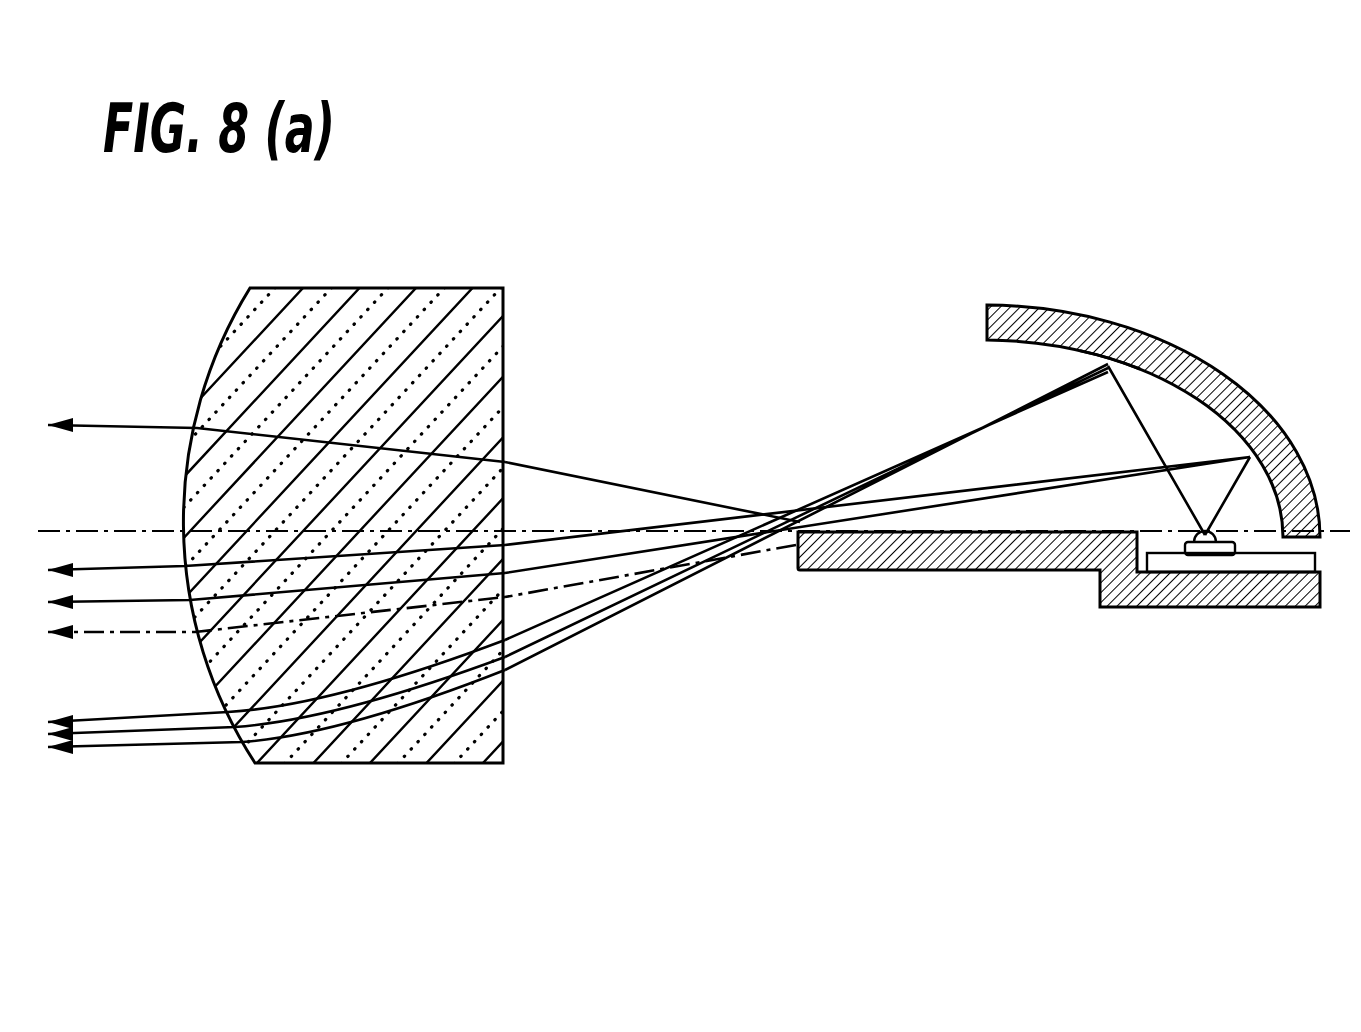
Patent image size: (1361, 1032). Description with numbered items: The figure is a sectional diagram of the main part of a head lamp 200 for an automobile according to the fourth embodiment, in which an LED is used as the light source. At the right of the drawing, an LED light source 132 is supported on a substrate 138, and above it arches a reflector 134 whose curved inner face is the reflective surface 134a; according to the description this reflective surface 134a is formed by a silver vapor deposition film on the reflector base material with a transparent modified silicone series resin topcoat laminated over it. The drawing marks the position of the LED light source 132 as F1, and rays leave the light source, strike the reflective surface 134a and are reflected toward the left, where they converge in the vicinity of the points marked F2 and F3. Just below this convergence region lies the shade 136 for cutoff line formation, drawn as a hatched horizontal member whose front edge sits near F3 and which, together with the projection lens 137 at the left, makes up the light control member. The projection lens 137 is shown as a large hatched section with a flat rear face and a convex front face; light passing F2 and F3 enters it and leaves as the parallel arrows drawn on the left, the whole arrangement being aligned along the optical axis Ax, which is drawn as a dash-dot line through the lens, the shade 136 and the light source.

The head lamp 200 is at (980, 246).
The LED light source 132 is at (1176, 524).
The reflector 134 is at (1162, 330).
The reflective surface 134a is at (1173, 392).
The shade 136 is at (842, 585).
The projection lens 137 is at (790, 737).
The substrate 138 is at (660, 541).
The first focal point F1 is at (1212, 533).
The second focal point F2 is at (758, 515).
The third focal point F3 is at (797, 515).
The optical axis Ax is at (108, 528).